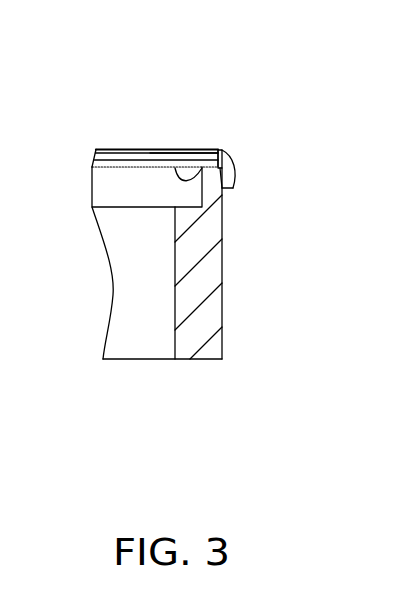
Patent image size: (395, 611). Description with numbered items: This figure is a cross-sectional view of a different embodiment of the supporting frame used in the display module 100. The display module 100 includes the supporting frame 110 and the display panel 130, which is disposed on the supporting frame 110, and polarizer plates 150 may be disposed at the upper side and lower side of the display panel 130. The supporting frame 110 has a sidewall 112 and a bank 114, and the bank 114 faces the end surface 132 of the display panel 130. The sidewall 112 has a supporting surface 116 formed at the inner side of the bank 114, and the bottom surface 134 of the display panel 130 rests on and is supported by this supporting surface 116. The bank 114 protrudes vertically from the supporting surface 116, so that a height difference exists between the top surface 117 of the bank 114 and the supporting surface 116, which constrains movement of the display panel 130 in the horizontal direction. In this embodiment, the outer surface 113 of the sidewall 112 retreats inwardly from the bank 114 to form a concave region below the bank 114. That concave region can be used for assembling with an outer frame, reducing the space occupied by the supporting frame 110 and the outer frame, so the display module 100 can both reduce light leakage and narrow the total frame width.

The display module 100 is at (65, 48).
The supporting frame 110 is at (230, 325).
The sidewall 112 is at (204, 229).
The outer surface 113 is at (221, 266).
The bank 114 is at (228, 152).
The supporting surface 116 is at (232, 186).
The top surface 117 is at (222, 149).
The display panel 130 is at (132, 155).
The end surface 132 is at (220, 149).
The bottom surface 134 is at (175, 168).
The polarizer plate 150 is at (115, 149).